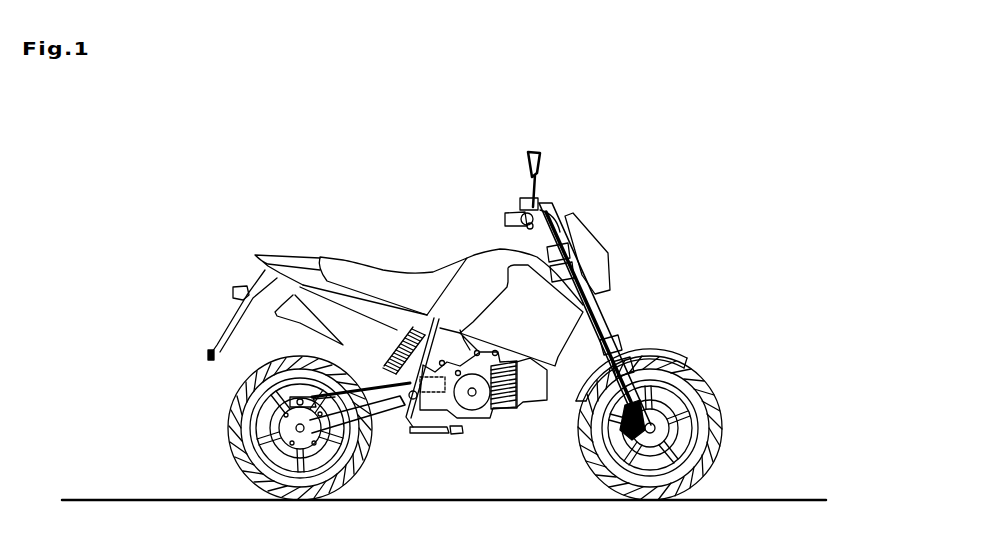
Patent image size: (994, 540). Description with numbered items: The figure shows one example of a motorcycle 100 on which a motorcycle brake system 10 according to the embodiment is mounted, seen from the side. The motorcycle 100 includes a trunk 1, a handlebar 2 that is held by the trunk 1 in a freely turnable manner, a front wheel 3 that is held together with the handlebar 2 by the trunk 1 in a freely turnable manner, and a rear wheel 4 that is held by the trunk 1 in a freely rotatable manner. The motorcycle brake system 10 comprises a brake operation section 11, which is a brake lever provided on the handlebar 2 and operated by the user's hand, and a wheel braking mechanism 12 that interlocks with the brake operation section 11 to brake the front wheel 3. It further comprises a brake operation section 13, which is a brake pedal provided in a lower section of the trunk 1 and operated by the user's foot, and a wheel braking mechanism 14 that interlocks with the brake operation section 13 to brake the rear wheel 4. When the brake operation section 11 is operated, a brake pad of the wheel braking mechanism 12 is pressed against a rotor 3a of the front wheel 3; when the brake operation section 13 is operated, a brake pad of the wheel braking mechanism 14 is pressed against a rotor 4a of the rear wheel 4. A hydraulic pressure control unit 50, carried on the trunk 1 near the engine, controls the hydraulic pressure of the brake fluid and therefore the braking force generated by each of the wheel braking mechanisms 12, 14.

The motorcycle 100 is at (708, 120).
The trunk 1 is at (412, 283).
The handlebar 2 is at (520, 200).
The front wheel 3 is at (725, 443).
The rotor 3a is at (664, 426).
The rear wheel 4 is at (220, 455).
The rotor 4a is at (285, 432).
The motorcycle brake system 10 is at (644, 326).
The brake operation section 11 is at (548, 210).
The wheel braking mechanism 12 is at (658, 385).
The brake operation section 13 is at (457, 430).
The wheel braking mechanism 14 is at (261, 409).
The hydraulic pressure control unit 50 is at (430, 397).